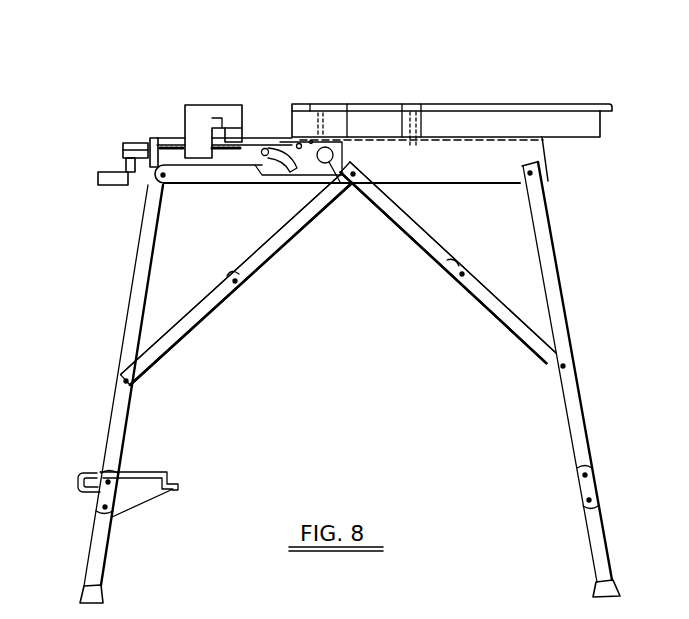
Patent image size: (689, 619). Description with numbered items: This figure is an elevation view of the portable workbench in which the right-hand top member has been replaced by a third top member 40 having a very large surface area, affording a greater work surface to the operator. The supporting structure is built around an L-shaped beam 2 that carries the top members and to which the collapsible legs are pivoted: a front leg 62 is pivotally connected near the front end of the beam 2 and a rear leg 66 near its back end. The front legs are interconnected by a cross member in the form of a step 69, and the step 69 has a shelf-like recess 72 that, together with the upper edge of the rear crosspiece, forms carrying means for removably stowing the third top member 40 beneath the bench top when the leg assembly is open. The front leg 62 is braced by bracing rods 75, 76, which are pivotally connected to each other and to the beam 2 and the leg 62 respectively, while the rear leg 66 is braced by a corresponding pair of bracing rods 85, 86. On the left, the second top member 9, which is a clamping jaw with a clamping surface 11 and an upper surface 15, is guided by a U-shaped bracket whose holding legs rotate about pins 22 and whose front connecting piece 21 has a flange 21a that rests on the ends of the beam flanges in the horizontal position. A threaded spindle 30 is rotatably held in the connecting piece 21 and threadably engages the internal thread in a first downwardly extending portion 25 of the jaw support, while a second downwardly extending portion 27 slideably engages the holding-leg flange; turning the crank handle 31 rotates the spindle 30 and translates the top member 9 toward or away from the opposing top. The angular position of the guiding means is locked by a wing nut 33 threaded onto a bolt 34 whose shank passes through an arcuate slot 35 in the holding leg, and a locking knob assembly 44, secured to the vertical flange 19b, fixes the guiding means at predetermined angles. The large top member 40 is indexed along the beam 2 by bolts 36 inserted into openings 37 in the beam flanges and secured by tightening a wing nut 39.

The beam 2 is at (498, 165).
The second top member 9 is at (228, 114).
The clamping surface 11 is at (243, 135).
The upper surface 15 is at (197, 105).
The vertical flange 19b is at (218, 160).
The front connecting piece 21 is at (168, 186).
The flange 21a is at (152, 140).
The pin 22 is at (311, 141).
The first downwardly extending portion 25 is at (196, 160).
The second downwardly extending portion 27 is at (266, 148).
The threaded spindle 30 is at (232, 152).
The crank handle 31 is at (108, 185).
The wing nut 33 is at (299, 144).
The bolt 34 is at (270, 156).
The arcuate slot 35 is at (293, 176).
The bolt 36 is at (318, 130).
The opening 37 is at (483, 136).
The wing nut 39 is at (422, 147).
The third top member 40 is at (592, 105).
The locking knob assembly 44 is at (340, 182).
The leg 62 is at (138, 307).
The leg 66 is at (547, 272).
The step 69 is at (97, 473).
The shelf-like recess 72 is at (175, 483).
The bracing rod 75 is at (277, 243).
The bracing rod 76 is at (186, 328).
The bracing rod 85 is at (443, 253).
The bracing rod 86 is at (520, 328).